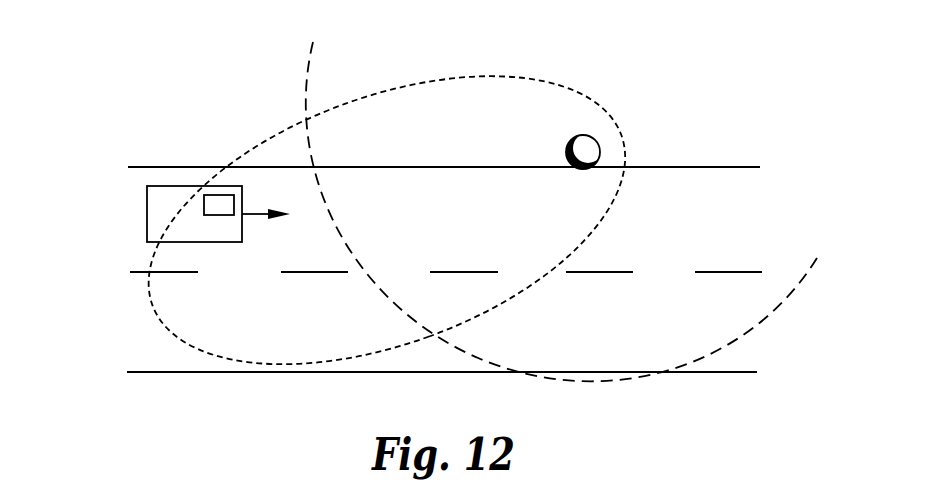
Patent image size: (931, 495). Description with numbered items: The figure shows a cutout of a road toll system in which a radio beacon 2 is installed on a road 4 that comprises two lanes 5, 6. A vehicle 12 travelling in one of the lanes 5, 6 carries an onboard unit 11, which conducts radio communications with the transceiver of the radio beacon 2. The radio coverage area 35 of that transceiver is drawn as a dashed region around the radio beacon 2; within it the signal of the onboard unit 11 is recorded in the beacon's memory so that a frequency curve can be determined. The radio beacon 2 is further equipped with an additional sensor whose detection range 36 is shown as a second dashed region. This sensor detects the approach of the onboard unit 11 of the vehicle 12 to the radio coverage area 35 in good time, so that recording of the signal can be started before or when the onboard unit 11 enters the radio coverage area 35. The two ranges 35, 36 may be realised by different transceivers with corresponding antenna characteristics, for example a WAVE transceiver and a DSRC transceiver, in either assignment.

The radio beacon 2 is at (592, 150).
The road 4 is at (150, 372).
The lane 5 is at (674, 226).
The lane 6 is at (674, 331).
The onboard unit 11 is at (220, 202).
The vehicle 12 is at (147, 205).
The radio coverage area 35 is at (310, 70).
The detection range 36 is at (267, 142).